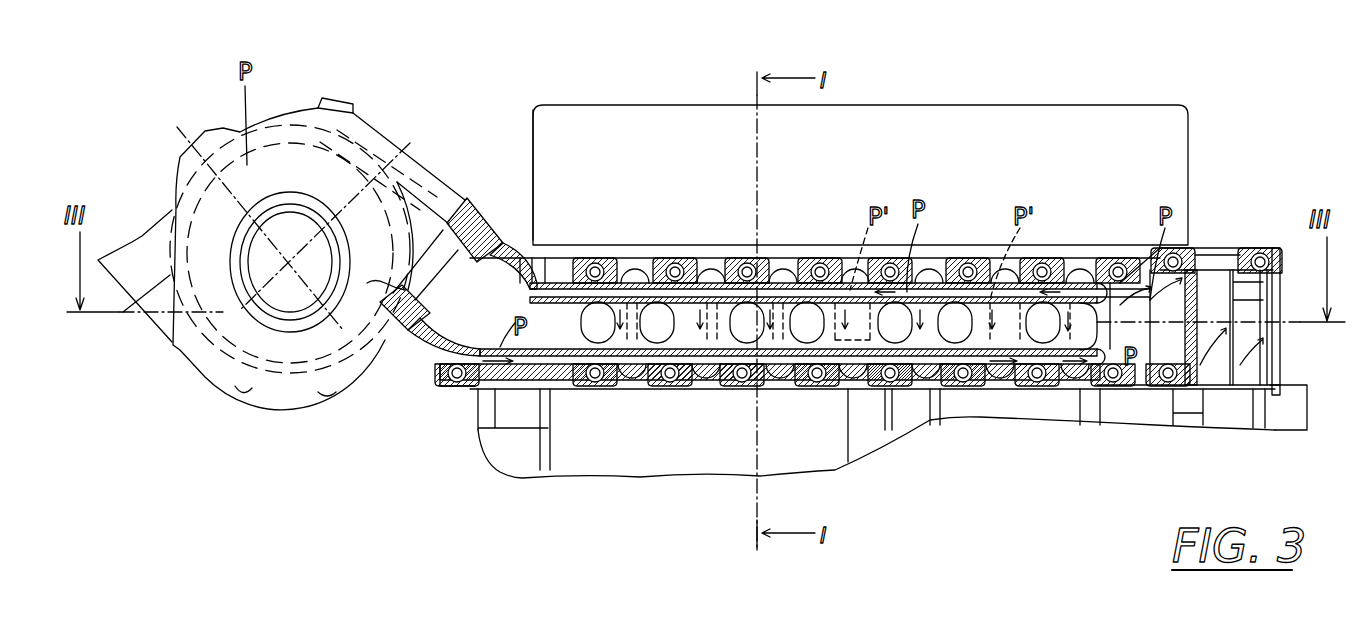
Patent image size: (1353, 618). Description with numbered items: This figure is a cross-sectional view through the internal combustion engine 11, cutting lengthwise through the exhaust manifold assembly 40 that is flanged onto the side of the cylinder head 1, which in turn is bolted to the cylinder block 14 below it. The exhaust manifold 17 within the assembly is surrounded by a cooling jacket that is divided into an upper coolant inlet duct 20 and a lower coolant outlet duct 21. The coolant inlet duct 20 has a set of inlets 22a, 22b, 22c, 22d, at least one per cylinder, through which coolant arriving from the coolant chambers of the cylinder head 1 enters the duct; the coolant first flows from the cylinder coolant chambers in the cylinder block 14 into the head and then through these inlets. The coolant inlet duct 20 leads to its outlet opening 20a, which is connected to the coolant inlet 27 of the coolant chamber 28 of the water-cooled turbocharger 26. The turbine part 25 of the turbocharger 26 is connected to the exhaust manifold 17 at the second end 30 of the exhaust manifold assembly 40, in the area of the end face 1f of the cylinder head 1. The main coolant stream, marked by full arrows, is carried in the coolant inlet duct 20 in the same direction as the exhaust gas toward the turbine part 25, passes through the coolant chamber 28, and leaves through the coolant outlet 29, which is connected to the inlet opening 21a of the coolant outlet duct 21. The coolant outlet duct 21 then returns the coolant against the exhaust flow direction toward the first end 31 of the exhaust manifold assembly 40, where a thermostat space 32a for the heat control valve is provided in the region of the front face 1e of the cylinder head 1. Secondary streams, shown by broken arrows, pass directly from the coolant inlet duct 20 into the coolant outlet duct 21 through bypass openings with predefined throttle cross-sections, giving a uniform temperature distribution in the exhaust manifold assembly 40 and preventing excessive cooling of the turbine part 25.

The cylinder head 1 is at (1190, 158).
The front face 1e is at (1193, 245).
The end face 1f is at (533, 165).
The internal combustion engine 11 is at (1290, 428).
The cylinder block 14 is at (842, 442).
The exhaust manifold 17 is at (578, 350).
The coolant inlet duct 20 is at (555, 288).
The outlet opening of the coolant inlet duct 20a is at (500, 215).
The coolant outlet duct 21 is at (710, 384).
The inlet opening of the coolant outlet duct 21a is at (408, 358).
The inlet 22a is at (627, 262).
The inlet 22b is at (778, 268).
The inlet 22c is at (928, 278).
The inlet 22d is at (1078, 280).
The turbine part 25 is at (158, 222).
The turbocharger 26 is at (222, 130).
The coolant inlet of the turbocharger coolant chamber 27 is at (495, 215).
The coolant chamber of the turbocharger 28 is at (165, 226).
The coolant outlet of the turbocharger 29 is at (383, 377).
The second end of the exhaust manifold assembly 30 is at (465, 387).
The first end of the exhaust manifold assembly 31 is at (1137, 312).
The thermostat space 32a is at (1247, 252).
The exhaust manifold assembly 40 is at (832, 385).